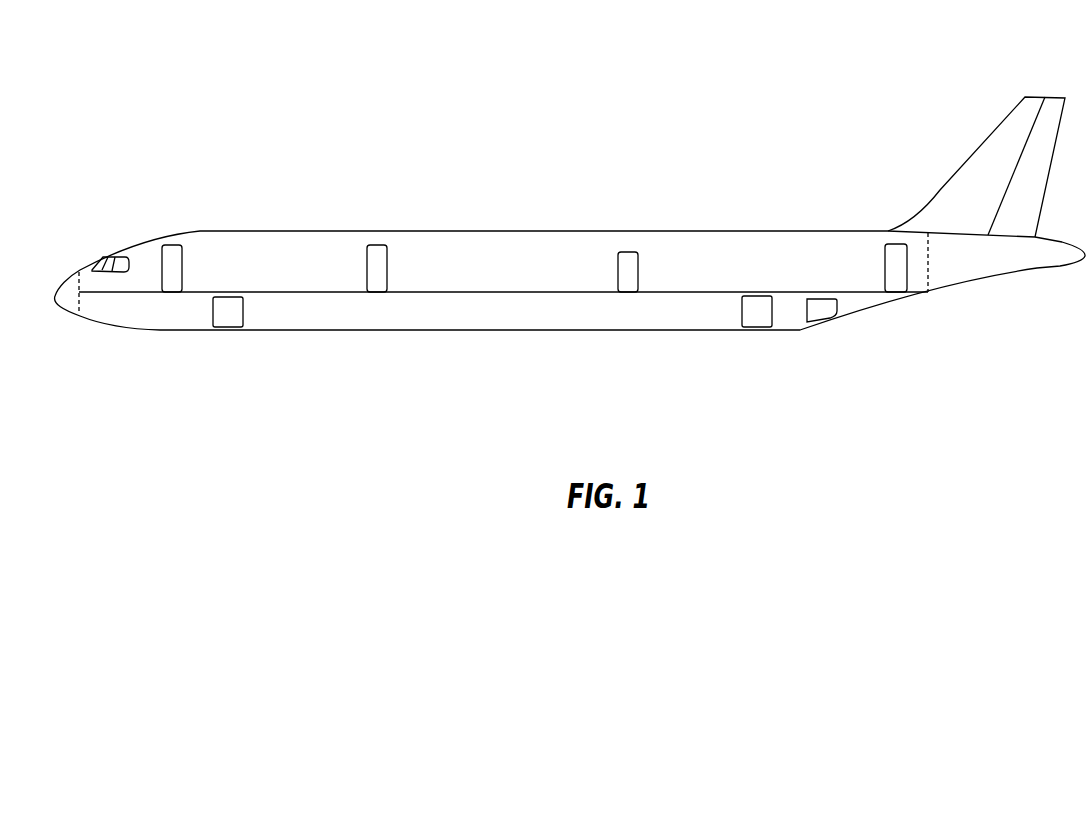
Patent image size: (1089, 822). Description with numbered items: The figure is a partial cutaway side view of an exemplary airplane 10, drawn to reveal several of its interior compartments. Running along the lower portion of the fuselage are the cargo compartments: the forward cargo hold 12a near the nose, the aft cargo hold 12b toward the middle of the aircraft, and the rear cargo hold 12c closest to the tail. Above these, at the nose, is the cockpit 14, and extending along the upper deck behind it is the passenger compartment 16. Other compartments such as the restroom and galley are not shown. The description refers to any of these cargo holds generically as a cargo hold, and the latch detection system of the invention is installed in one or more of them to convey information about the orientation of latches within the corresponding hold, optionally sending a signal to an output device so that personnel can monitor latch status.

The airplane 10 is at (676, 82).
The forward cargo hold 12a is at (305, 305).
The aft cargo hold 12b is at (528, 306).
The rear cargo hold 12c is at (867, 309).
The cockpit 14 is at (119, 257).
The passenger compartment 16 is at (505, 265).